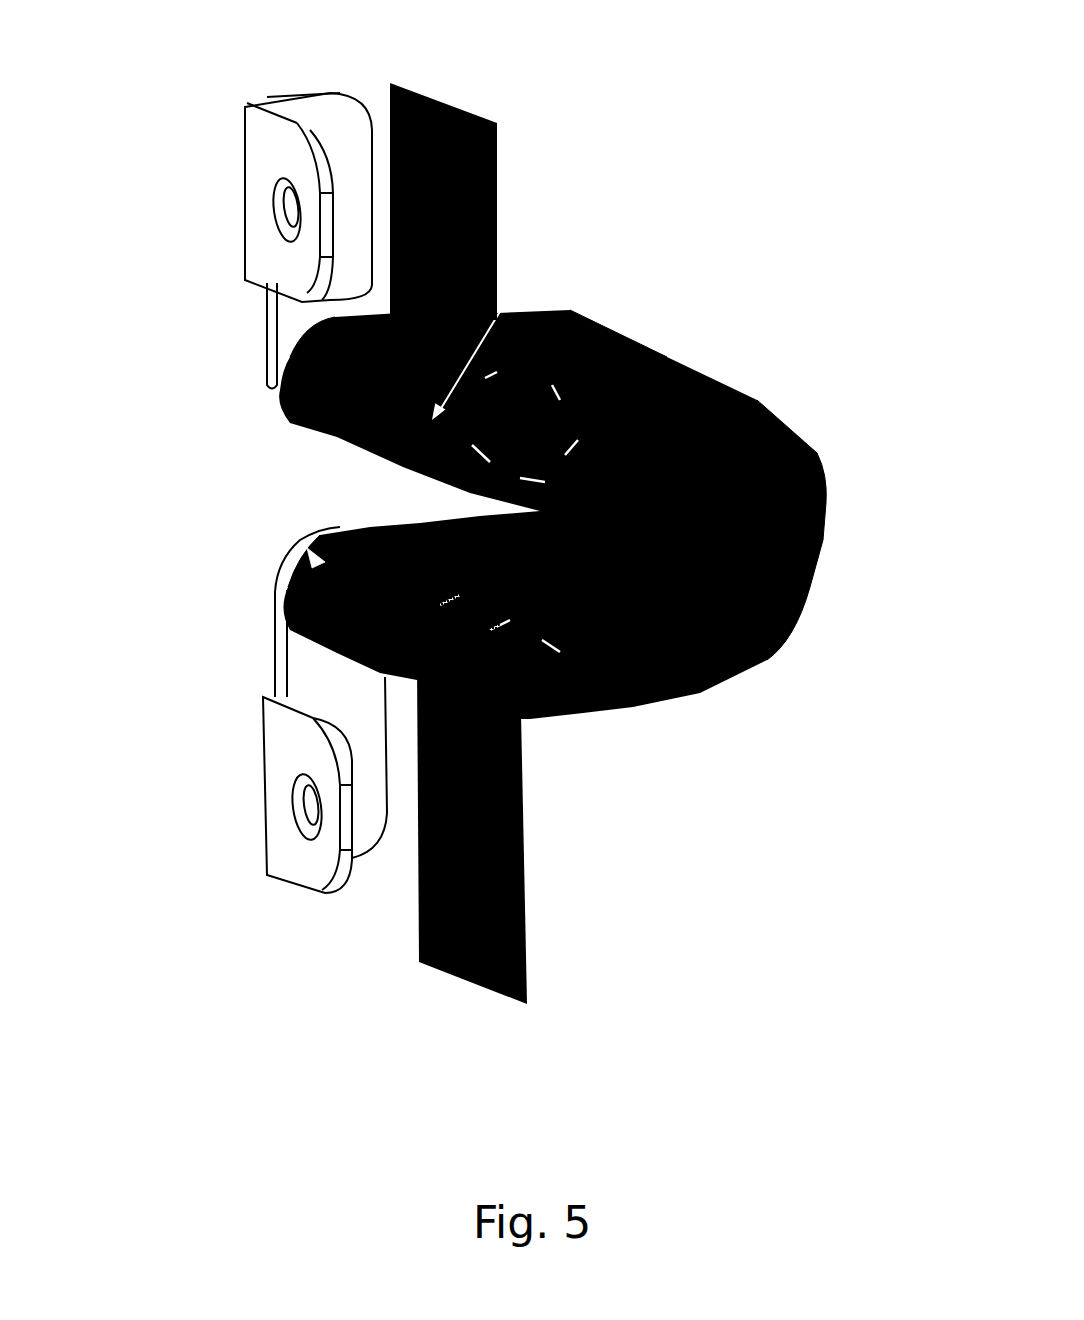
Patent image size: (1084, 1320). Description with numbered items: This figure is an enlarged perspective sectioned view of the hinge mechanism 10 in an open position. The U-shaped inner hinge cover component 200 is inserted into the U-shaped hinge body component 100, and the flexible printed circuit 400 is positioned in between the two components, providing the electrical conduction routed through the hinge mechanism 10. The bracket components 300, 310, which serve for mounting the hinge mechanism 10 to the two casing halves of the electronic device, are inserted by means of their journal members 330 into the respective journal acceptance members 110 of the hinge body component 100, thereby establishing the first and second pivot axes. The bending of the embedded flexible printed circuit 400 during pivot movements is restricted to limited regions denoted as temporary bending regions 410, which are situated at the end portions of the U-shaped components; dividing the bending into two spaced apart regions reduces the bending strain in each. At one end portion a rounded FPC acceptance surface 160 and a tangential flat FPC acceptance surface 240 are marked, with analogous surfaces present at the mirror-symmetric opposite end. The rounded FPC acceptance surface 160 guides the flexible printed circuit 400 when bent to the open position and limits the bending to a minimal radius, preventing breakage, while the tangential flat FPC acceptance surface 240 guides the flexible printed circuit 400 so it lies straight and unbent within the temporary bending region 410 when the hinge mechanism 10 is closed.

The hinge mechanism 10 is at (748, 882).
The hinge body component 100 is at (800, 447).
The journal acceptance member 110 is at (290, 410).
The rounded FPC acceptance surface 160 is at (600, 330).
The inner hinge cover component 200 is at (813, 587).
The tangential flat FPC acceptance surface 240 is at (507, 300).
The bracket component 300 is at (230, 180).
The bracket component 310 is at (242, 813).
The journal member 330 is at (246, 385).
The flexible printed circuit 400 is at (462, 97).
The temporary bending region 410 is at (667, 360).